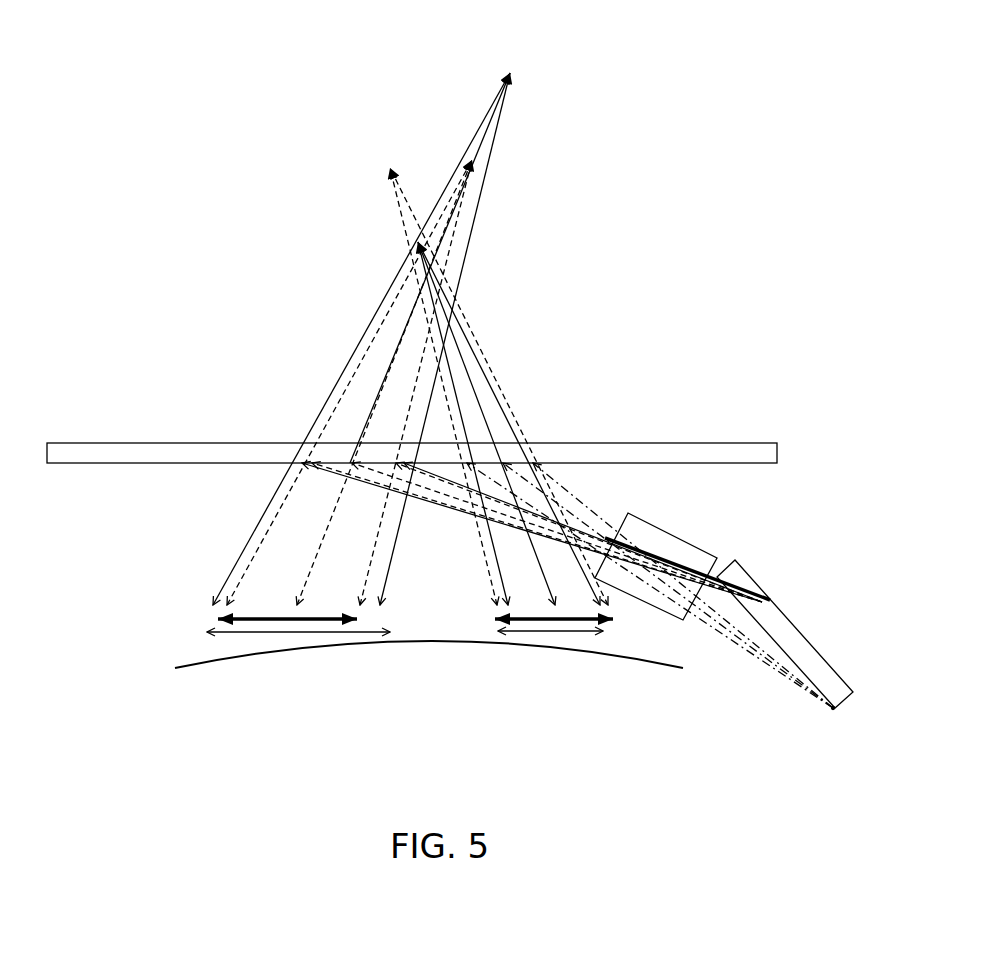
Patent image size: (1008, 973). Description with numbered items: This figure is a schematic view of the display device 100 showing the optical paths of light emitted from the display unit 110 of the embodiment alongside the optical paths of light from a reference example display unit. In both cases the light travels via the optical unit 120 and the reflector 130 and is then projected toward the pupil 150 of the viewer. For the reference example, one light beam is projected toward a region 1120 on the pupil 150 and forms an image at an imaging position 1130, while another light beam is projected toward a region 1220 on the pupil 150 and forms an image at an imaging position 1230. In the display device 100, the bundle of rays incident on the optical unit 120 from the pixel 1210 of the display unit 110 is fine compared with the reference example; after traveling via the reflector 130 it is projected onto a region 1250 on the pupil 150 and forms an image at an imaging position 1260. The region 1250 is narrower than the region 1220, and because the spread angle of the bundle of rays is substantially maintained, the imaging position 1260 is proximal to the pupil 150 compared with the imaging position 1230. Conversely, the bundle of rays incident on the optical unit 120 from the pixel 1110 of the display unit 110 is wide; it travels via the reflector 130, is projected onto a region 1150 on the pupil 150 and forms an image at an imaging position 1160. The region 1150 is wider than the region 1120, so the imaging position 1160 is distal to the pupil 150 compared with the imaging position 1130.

The display device 100 is at (660, 312).
The display unit 110 is at (800, 630).
The pixel (second pixel) 1110 is at (833, 710).
The optical unit 120 is at (690, 543).
The pixel (first pixel) 1210 is at (770, 600).
The reflector 130 is at (778, 443).
The pupil 150 is at (205, 662).
The region 1120 is at (607, 631).
The region 1150 is at (618, 619).
The region 1220 is at (392, 632).
The region 1250 is at (362, 619).
The imaging position 1130 is at (412, 244).
The imaging position 1160 is at (382, 165).
The imaging position 1230 is at (505, 70).
The imaging position 1260 is at (460, 150).